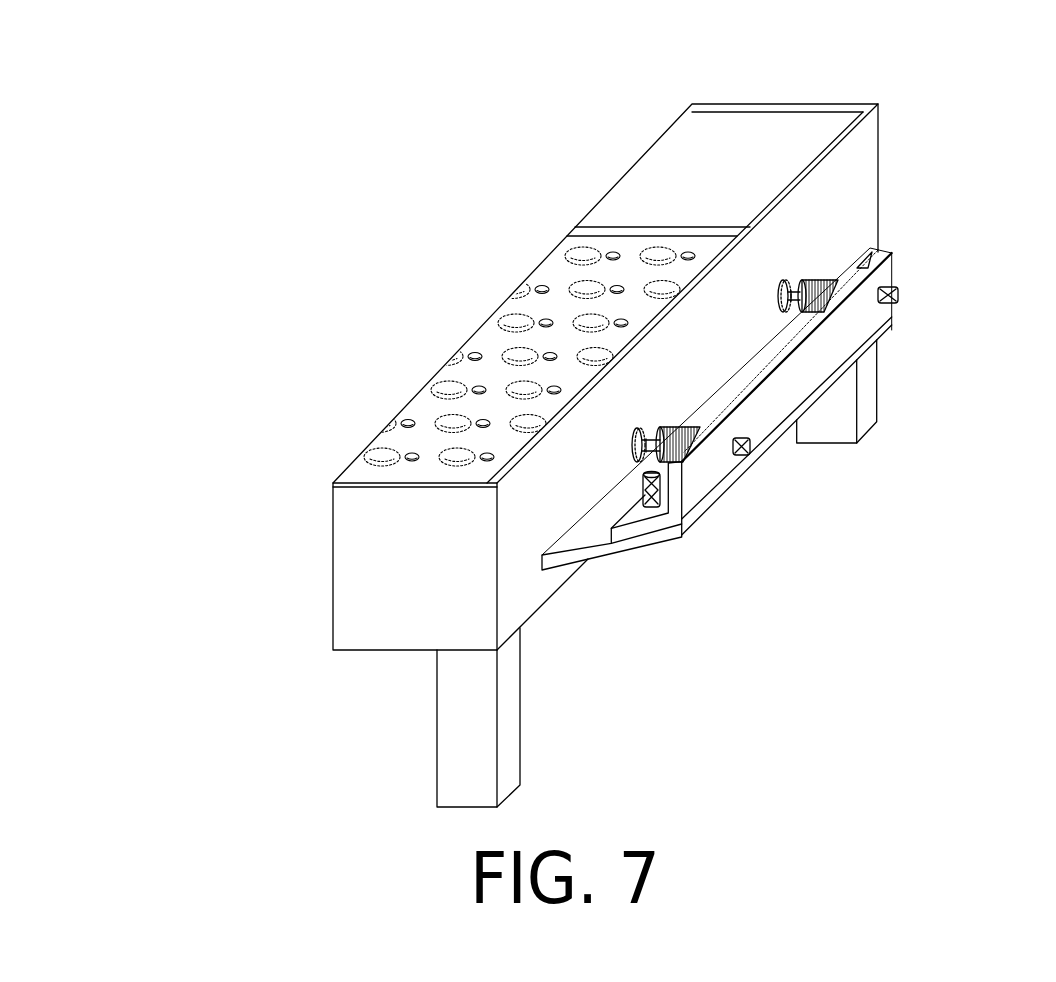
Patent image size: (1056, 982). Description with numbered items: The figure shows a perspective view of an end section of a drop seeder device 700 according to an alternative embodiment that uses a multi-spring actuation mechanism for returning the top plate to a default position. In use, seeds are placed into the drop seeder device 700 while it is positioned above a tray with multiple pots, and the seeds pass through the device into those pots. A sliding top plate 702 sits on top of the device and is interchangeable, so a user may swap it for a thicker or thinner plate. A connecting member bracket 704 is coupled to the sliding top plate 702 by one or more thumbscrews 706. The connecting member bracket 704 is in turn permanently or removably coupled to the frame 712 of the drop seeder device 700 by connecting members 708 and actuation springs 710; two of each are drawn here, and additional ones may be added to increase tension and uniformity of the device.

The drop seeder device 700 is at (903, 68).
The sliding top plate 702 is at (353, 466).
The connecting member bracket 704 is at (703, 470).
The thumbscrews 706 is at (653, 503).
The connecting members 708 is at (740, 447).
The actuation springs 710 is at (838, 263).
The frame 712 is at (863, 197).